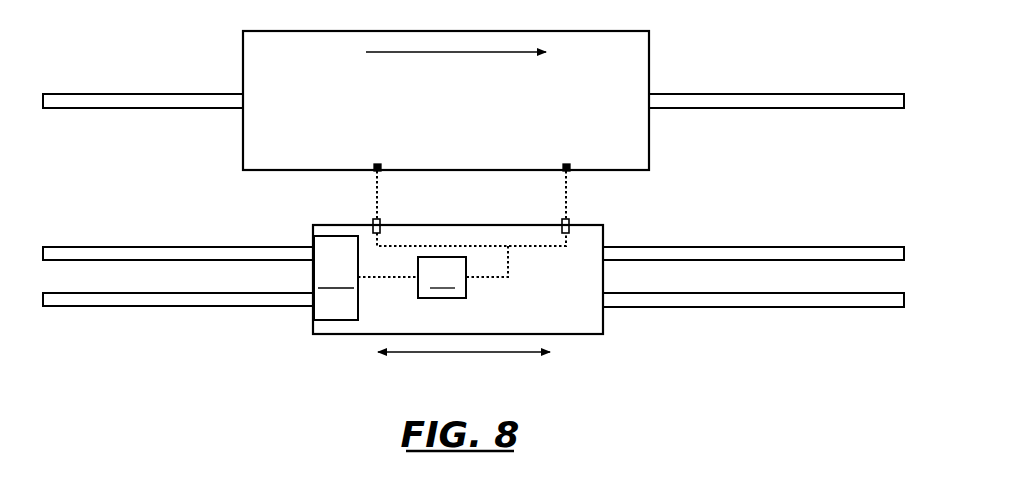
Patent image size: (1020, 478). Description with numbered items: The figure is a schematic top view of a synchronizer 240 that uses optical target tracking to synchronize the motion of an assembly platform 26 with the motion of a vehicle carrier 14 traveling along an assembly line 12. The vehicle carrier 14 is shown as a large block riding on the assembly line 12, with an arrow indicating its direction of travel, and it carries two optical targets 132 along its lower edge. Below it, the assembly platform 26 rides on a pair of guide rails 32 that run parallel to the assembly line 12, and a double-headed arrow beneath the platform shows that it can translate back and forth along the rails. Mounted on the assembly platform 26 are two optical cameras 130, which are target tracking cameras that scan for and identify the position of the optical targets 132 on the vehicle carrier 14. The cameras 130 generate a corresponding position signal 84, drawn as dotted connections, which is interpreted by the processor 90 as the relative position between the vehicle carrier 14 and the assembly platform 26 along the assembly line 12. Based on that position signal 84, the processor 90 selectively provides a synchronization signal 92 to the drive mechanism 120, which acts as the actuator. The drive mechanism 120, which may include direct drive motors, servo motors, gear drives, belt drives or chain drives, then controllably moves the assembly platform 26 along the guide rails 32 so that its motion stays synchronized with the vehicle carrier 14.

The assembly line 12 is at (725, 94).
The vehicle carrier 14 is at (243, 52).
The assembly platform 26 is at (312, 323).
The guide rails 32 is at (812, 246).
The position signal 84 is at (497, 278).
The processor 90 is at (442, 277).
The synchronization signal 92 is at (368, 278).
The drive mechanism 120 is at (336, 278).
The optical cameras 130 is at (381, 222).
The optical targets 132 is at (380, 164).
The synchronizer 240 is at (688, 206).